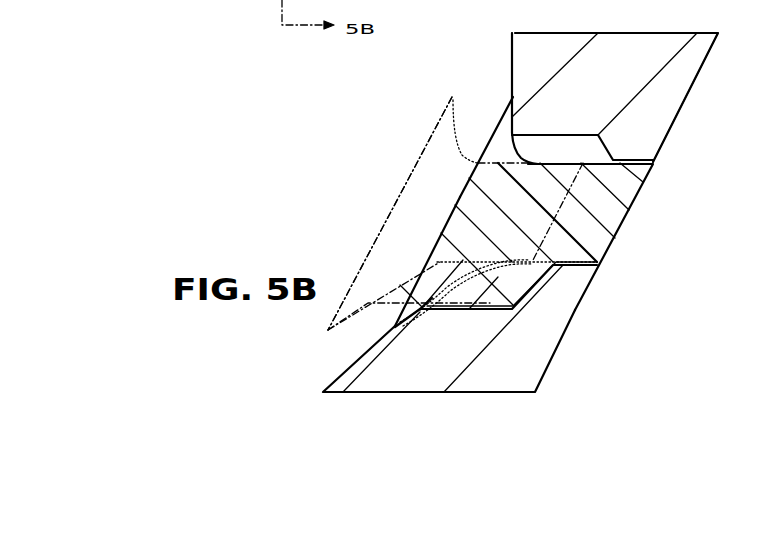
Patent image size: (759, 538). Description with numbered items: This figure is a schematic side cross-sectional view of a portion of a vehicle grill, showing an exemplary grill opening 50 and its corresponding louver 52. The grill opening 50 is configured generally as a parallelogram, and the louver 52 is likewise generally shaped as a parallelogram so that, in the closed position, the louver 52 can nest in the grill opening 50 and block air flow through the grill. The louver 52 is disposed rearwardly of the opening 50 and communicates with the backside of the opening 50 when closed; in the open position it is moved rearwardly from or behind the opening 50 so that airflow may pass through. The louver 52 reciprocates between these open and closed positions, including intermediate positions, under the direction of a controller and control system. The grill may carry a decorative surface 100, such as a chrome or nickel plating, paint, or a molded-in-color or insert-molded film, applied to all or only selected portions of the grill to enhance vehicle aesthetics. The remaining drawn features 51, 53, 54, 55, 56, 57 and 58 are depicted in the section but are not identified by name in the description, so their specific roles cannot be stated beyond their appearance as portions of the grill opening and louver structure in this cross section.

The grill opening 50 is at (658, 167).
The side face of block 51 is at (512, 63).
The louver 52 is at (612, 203).
The top face of block 53 is at (678, 117).
The side edge 54 is at (492, 149).
The passage 55 is at (513, 100).
The plate 56 is at (602, 242).
The channel 57 is at (513, 288).
The base 58 is at (490, 307).
The decorative surface 100 is at (512, 56).